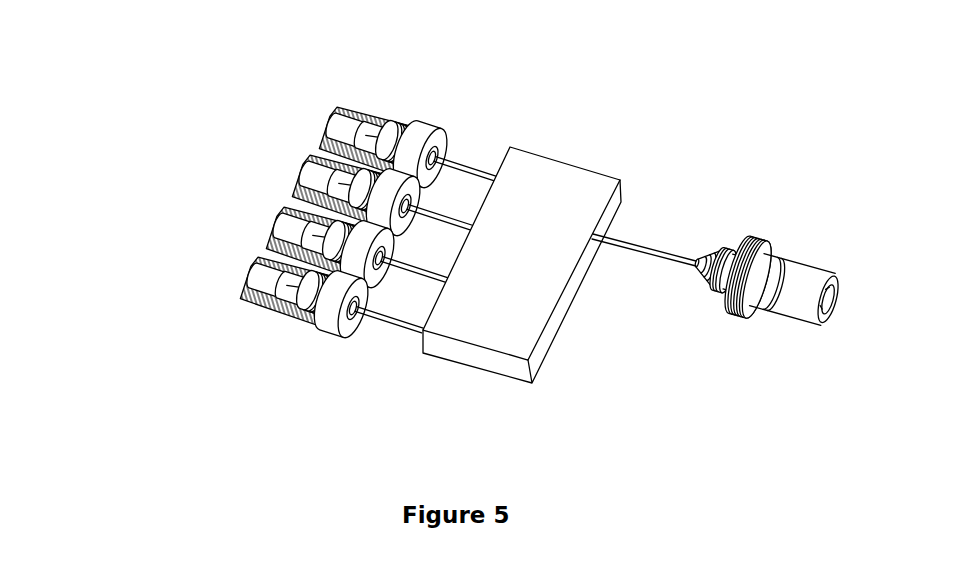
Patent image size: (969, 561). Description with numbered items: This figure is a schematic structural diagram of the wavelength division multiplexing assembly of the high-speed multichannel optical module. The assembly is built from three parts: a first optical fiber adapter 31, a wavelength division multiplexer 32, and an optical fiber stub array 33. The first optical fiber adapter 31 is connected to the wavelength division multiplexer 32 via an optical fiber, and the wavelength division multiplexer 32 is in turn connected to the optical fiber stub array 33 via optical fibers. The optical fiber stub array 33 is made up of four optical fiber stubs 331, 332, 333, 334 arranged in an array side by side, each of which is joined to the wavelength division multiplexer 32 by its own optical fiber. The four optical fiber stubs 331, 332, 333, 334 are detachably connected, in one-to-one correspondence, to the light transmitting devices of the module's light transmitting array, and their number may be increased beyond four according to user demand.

The first optical fiber adapter 31 is at (802, 283).
The wavelength division multiplexer 32 is at (565, 212).
The optical fiber stub array 33 is at (137, 178).
The optical fiber stub 331 is at (335, 120).
The optical fiber stub 332 is at (309, 172).
The optical fiber stub 333 is at (288, 216).
The optical fiber stub 334 is at (256, 270).